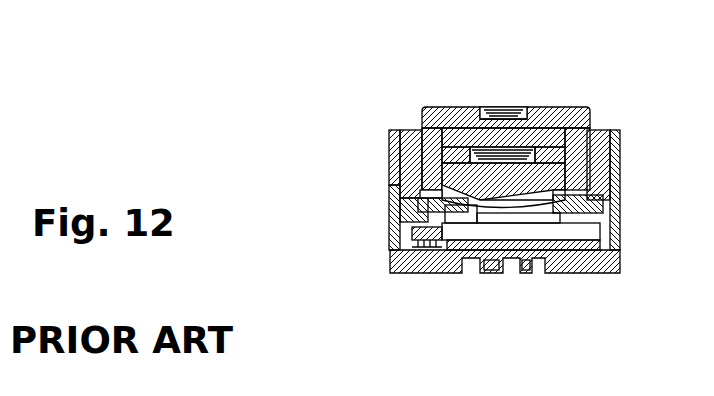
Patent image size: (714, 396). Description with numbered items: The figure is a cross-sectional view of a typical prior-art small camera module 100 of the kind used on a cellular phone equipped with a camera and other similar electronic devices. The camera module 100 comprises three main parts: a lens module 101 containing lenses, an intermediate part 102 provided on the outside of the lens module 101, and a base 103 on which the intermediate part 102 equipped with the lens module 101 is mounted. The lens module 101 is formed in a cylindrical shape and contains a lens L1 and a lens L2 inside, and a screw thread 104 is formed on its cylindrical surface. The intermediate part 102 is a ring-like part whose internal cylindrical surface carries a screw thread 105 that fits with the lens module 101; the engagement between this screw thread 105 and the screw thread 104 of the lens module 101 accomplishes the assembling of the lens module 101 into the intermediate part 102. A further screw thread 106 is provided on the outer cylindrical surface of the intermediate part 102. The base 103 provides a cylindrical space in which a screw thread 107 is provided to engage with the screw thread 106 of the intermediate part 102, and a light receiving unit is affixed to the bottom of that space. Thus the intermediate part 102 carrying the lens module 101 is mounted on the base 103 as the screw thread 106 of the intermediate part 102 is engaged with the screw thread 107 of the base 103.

The small camera module 100 is at (456, 173).
The lens module 101 is at (503, 74).
The intermediate part 102 is at (398, 142).
The base 103 is at (396, 212).
The screw thread 104 is at (433, 143).
The screw thread 105 is at (395, 128).
The screw thread 106 is at (397, 182).
The screw thread 107 is at (395, 160).
The lens L1 is at (497, 118).
The lens L2 is at (495, 186).